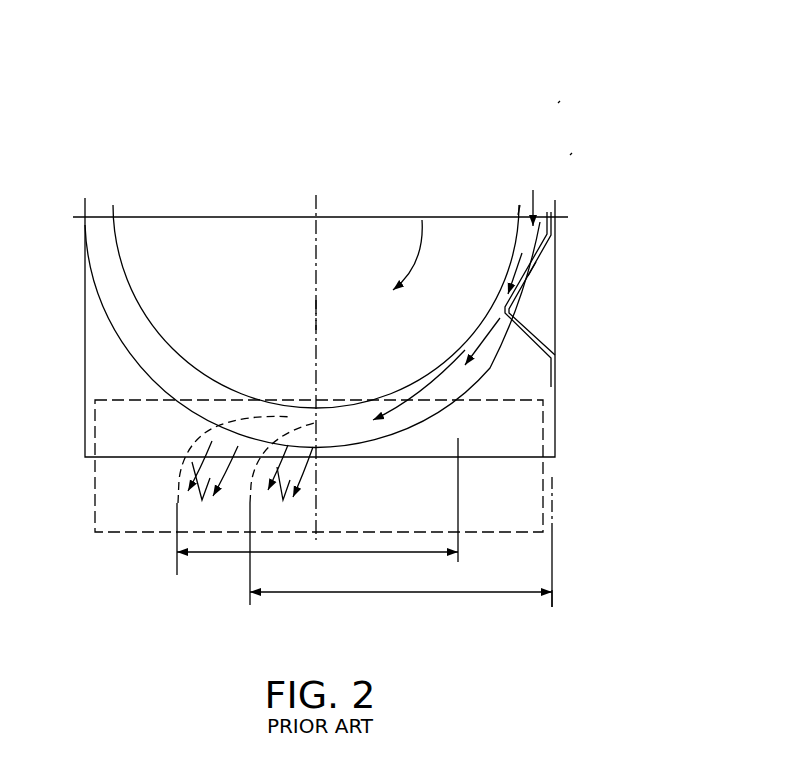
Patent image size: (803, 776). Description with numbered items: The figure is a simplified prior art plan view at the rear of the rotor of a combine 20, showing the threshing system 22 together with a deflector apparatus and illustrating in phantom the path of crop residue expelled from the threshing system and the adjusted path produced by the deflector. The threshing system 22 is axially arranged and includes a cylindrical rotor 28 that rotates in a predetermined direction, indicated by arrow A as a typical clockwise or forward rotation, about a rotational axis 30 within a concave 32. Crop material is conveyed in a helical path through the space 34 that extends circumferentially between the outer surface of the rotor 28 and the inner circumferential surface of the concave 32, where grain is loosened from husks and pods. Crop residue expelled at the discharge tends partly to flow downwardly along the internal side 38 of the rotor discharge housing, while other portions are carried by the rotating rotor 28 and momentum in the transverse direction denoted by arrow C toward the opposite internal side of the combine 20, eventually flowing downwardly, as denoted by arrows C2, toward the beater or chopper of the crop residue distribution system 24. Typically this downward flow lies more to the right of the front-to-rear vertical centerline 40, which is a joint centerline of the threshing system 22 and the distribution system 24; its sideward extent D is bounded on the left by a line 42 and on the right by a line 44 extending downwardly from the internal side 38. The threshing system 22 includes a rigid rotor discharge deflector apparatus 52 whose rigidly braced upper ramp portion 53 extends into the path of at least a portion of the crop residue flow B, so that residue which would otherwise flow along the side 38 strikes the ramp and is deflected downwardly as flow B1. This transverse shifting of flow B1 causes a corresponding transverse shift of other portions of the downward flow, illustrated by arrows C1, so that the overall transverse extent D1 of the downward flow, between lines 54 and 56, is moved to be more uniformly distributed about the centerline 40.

The combine 20 is at (560, 102).
The threshing system 22 is at (571, 154).
The crop residue distribution system 24 is at (555, 520).
The rotor 28 is at (518, 215).
The rotational axis 30 is at (318, 213).
The concave 32 is at (123, 337).
The space 34 is at (103, 265).
The internal side 38 is at (553, 432).
The vertical centerline 40 is at (305, 313).
The line 42 is at (248, 571).
The line 44 is at (553, 578).
The rigid rotor discharge deflector apparatus 52 is at (545, 274).
The upper ramp portion 53 is at (535, 262).
The line 54 is at (176, 523).
The line 56 is at (459, 502).
The rotation direction arrow A is at (408, 260).
The crop residue flow B is at (537, 195).
The downwardly directed flow B1 is at (440, 421).
The transverse direction arrow C is at (405, 402).
The shifted flow arrows C1 is at (212, 485).
The downward flow arrows C2 is at (289, 487).
The extent D is at (334, 597).
The extent D1 is at (398, 560).